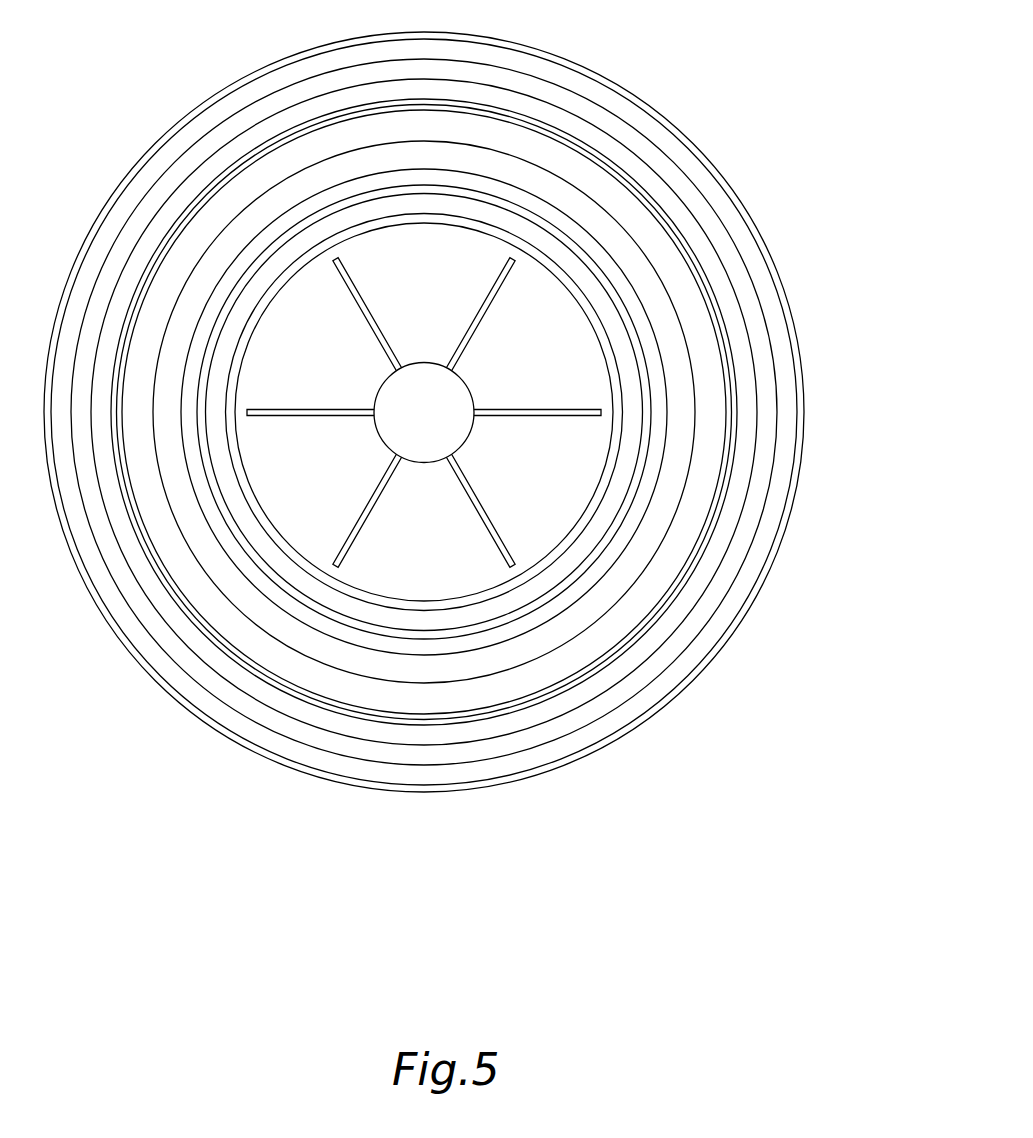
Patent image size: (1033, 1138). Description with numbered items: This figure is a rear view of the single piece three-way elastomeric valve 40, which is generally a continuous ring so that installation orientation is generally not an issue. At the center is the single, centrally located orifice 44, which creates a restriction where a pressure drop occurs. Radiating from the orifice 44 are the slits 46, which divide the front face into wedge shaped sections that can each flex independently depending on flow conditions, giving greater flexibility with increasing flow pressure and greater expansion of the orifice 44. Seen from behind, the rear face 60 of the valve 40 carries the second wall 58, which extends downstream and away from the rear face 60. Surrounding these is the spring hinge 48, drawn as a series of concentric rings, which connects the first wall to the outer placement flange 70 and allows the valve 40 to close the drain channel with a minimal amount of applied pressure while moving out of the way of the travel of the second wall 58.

The elastomeric valve 40 is at (451, 403).
The orifice 44 is at (434, 427).
The slits 46 is at (473, 317).
The spring hinge 48 is at (702, 527).
The second wall 58 is at (217, 380).
The rear face 60 is at (341, 471).
The outer placement flange 70 is at (782, 340).